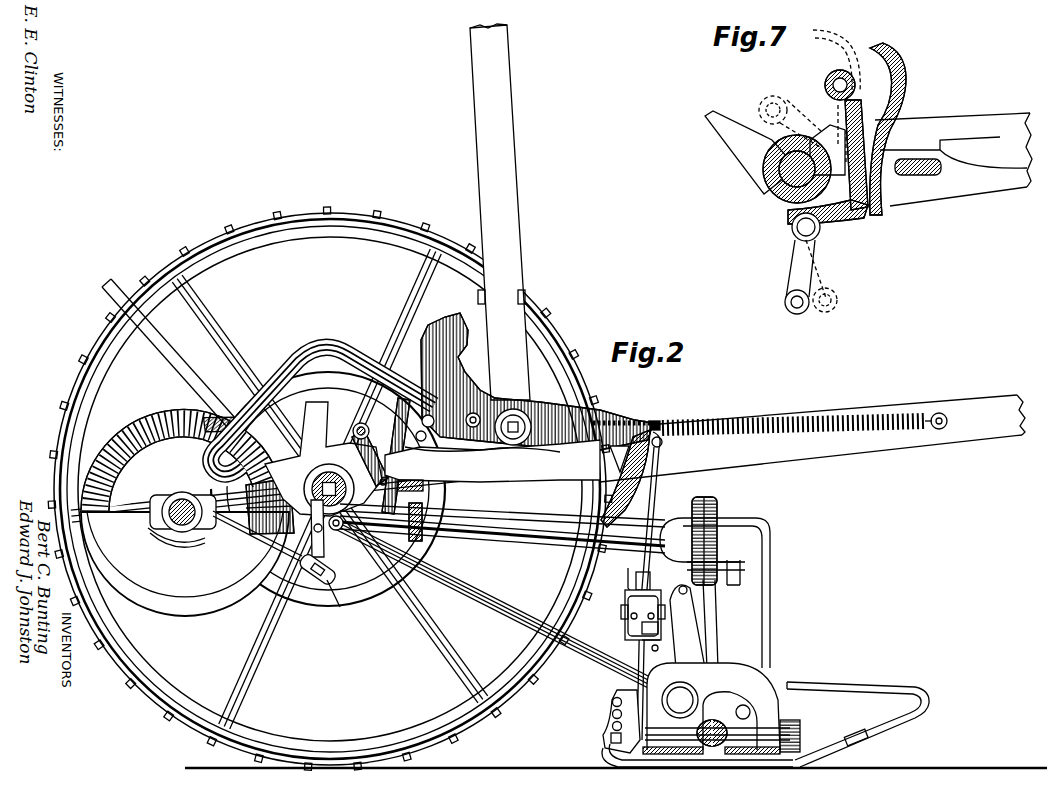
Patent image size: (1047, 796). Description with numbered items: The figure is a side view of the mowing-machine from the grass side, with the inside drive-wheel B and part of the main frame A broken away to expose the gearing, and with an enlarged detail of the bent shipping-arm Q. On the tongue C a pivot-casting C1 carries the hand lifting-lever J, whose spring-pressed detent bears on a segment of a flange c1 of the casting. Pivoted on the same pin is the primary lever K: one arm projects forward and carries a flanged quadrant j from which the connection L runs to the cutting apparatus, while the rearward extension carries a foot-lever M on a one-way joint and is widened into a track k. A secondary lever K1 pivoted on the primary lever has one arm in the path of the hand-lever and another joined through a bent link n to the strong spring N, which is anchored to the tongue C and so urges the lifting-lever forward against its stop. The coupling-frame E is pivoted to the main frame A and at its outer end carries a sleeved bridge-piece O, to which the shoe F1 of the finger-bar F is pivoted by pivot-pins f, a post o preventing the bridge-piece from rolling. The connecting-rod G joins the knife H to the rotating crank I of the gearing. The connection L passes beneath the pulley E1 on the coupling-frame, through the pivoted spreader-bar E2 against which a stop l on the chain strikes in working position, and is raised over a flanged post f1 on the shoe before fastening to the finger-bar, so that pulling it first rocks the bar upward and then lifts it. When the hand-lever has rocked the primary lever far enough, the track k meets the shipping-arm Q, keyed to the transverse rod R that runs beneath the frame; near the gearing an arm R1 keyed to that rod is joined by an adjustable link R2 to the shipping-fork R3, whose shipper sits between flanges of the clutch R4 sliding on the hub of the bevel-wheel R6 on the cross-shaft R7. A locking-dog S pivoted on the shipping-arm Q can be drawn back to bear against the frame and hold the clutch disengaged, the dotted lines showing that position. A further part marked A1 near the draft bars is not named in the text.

In FIG. 2, the drive-wheels B is at (274, 226).
In FIG. 2, the hand lifting-lever J is at (522, 222).
In FIG. 2, the track k is at (534, 380).
In FIG. 2, the flange c1 is at (483, 376).
In FIG. 2, the primary lever K is at (568, 413).
In FIG. 2, the pivot-casting C1 is at (586, 401).
In FIG. 2, the foot-lever M is at (322, 350).
In FIG. 2, the locking-dog S is at (355, 426).
In FIG. 7, the locking-dog S is at (826, 84).
In FIG. 2, the shipping-arm Q is at (360, 448).
In FIG. 7, the shipping-arm Q is at (912, 83).
In FIG. 2, the bevel-wheel R6 is at (170, 430).
In FIG. 2, the clutch R4 is at (166, 502).
In FIG. 2, the cross-shaft R7 is at (168, 524).
In FIG. 2, the shipping-fork R3 is at (210, 533).
In FIG. 2, the adjustable link R2 is at (268, 543).
In FIG. 2, the transverse rod R is at (340, 560).
In FIG. 7, the transverse rod R is at (800, 229).
In FIG. 2, the arm R1 is at (335, 590).
In FIG. 7, the arm R1 is at (800, 312).
In FIG. 2, the secondary lever K1 is at (458, 460).
In FIG. 2, the bent link n is at (521, 453).
In FIG. 2, the main frame A is at (547, 537).
In FIG. 7, the main frame A is at (757, 187).
In FIG. 2, the draft bar clamp A1 is at (432, 533).
In FIG. 2, the coupling-frame E is at (502, 613).
In FIG. 2, the spring N is at (817, 420).
In FIG. 2, the tongue C is at (795, 452).
In FIG. 7, the tongue C is at (953, 159).
In FIG. 2, the flanged quadrant j is at (662, 450).
In FIG. 2, the connection L is at (655, 500).
In FIG. 2, the rotating crank I is at (711, 505).
In FIG. 2, the spreader-bar E2 is at (630, 593).
In FIG. 2, the stop l is at (629, 578).
In FIG. 2, the pulley E1 is at (627, 600).
In FIG. 2, the post f1 is at (660, 630).
In FIG. 2, the post o is at (668, 650).
In FIG. 2, the connecting-rod G is at (719, 637).
In FIG. 2, the knife H is at (745, 720).
In FIG. 2, the bridge-piece O is at (713, 706).
In FIG. 2, the pivot-pins f is at (613, 728).
In FIG. 2, the finger-bar F is at (617, 757).
In FIG. 2, the shoe F1 is at (812, 757).